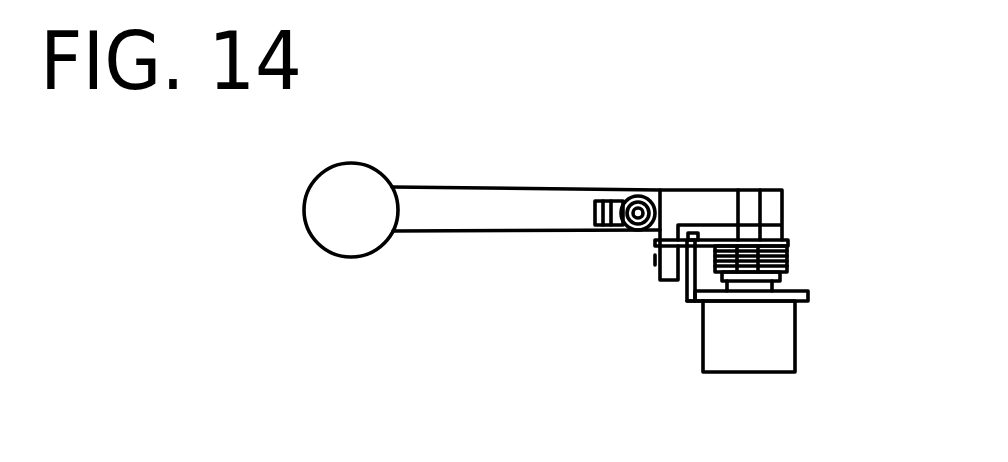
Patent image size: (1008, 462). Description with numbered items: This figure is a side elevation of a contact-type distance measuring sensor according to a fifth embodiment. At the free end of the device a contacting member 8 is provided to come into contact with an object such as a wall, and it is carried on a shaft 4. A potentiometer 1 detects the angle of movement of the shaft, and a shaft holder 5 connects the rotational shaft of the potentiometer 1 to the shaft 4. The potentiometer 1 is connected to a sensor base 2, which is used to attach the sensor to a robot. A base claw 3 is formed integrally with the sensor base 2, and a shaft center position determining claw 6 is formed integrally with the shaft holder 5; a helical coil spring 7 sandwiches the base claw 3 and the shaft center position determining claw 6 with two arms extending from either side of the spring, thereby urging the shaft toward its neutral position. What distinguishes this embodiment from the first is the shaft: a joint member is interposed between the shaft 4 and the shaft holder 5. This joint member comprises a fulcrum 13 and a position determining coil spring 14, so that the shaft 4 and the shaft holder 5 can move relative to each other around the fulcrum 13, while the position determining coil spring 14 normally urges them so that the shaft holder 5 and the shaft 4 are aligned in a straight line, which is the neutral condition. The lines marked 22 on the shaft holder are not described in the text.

The potentiometer 1 is at (787, 345).
The sensor base 2 is at (808, 295).
The base claw 3 is at (688, 298).
The shaft 4 is at (463, 198).
The shaft holder 5 is at (712, 200).
The shaft center position determining claw 6 is at (653, 258).
The helical coil spring 7 is at (790, 262).
The contacting member 8 is at (330, 238).
The fulcrum 13 is at (640, 200).
The position determining coil spring 14 is at (606, 200).
The guide slots 22 is at (752, 200).